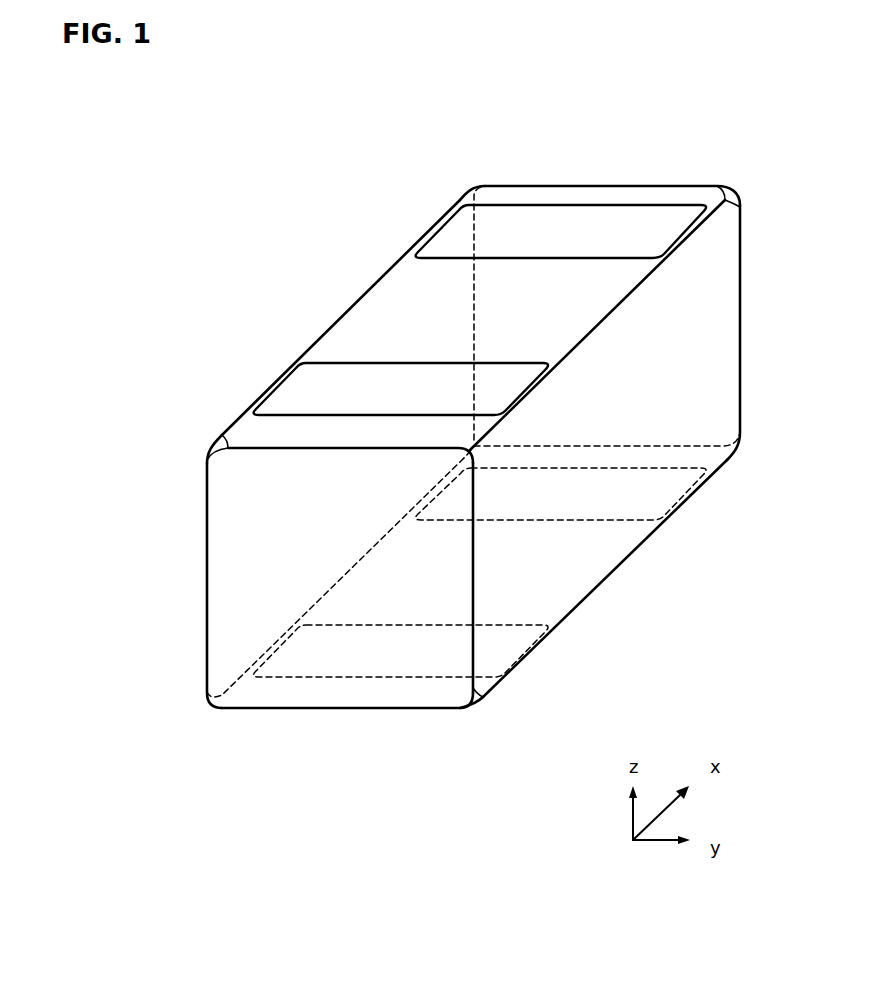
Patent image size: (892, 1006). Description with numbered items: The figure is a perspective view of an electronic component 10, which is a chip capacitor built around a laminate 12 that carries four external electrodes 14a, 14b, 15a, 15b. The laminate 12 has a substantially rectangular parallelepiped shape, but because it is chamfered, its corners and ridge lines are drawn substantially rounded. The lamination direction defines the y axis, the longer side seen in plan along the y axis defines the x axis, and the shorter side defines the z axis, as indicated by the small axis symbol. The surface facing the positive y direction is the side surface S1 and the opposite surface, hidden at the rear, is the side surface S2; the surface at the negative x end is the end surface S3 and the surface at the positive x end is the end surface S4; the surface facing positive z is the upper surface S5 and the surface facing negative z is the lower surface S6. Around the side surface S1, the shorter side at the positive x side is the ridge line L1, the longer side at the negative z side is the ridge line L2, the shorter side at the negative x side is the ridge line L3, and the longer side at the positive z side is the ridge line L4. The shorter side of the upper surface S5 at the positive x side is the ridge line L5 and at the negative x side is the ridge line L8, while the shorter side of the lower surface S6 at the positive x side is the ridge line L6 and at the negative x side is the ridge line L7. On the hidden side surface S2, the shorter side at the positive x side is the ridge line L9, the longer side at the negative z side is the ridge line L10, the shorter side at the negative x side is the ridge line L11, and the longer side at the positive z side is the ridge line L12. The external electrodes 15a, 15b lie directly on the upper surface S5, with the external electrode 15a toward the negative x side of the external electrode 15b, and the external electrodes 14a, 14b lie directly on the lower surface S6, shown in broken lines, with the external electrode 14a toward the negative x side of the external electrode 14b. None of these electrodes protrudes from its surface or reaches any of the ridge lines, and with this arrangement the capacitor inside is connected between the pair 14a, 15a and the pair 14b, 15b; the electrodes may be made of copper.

The electronic component 10 is at (313, 160).
The laminate 12 is at (631, 168).
The external electrode 14a is at (510, 650).
The external electrode 14b is at (663, 493).
The external electrode 15a is at (305, 400).
The external electrode 15b is at (463, 247).
The side surface S1 is at (600, 507).
The side surface S2 is at (330, 380).
The end surface S3 is at (345, 613).
The end surface S4 is at (655, 213).
The upper surface S5 is at (415, 328).
The lower surface S6 is at (553, 573).
The ridge line L1 is at (740, 330).
The ridge line L2 is at (623, 566).
The ridge line L3 is at (473, 555).
The ridge line L4 is at (582, 343).
The ridge line L5 is at (557, 184).
The ridge line L6 is at (585, 446).
The ridge line L7 is at (370, 710).
The ridge line L8 is at (332, 449).
The ridge line L9 is at (474, 310).
The ridge line L10 is at (343, 573).
The ridge line L11 is at (207, 573).
The ridge line L12 is at (337, 320).